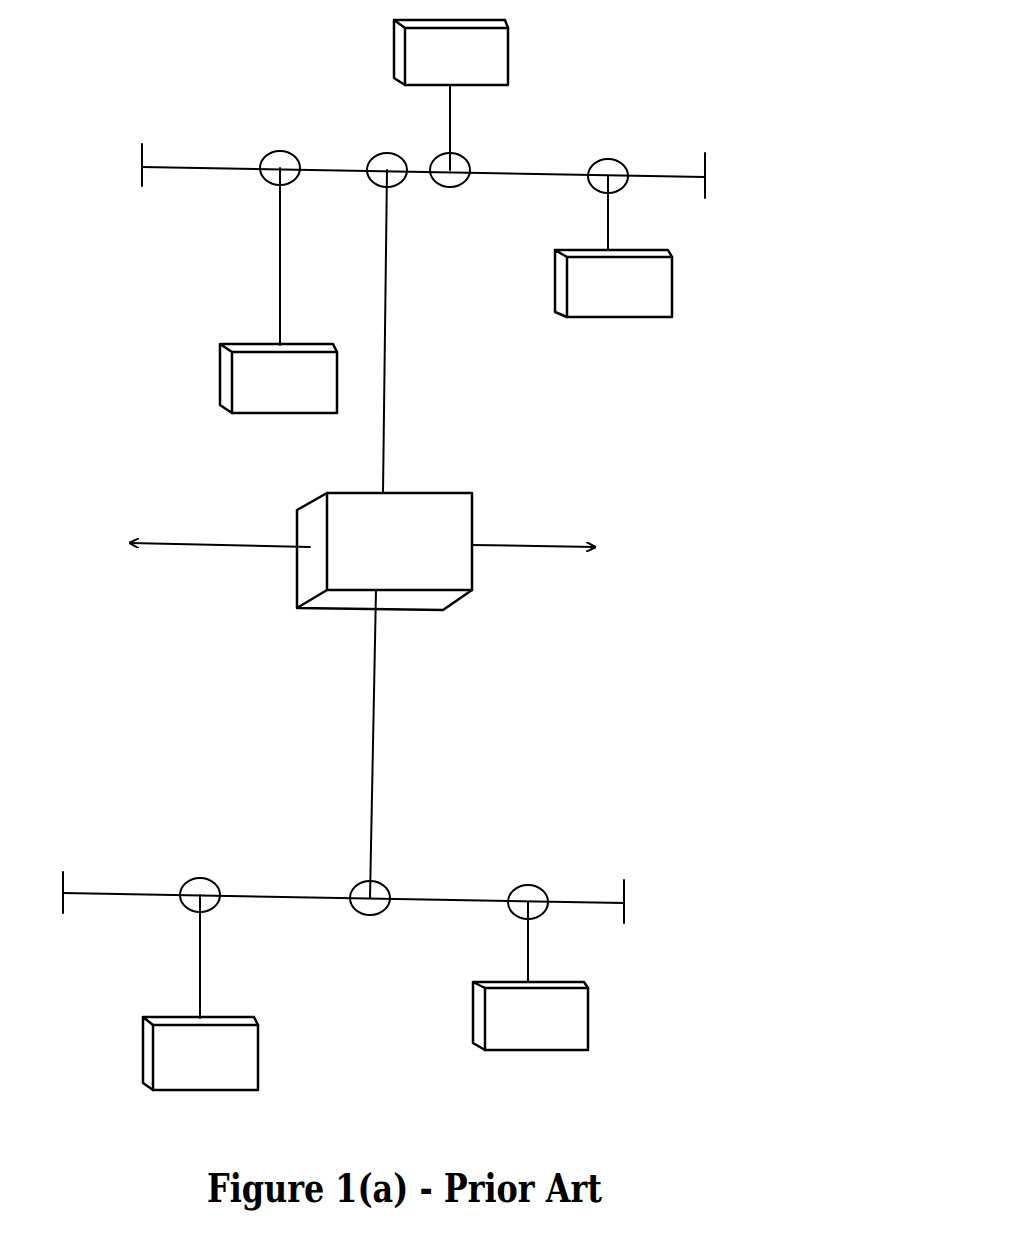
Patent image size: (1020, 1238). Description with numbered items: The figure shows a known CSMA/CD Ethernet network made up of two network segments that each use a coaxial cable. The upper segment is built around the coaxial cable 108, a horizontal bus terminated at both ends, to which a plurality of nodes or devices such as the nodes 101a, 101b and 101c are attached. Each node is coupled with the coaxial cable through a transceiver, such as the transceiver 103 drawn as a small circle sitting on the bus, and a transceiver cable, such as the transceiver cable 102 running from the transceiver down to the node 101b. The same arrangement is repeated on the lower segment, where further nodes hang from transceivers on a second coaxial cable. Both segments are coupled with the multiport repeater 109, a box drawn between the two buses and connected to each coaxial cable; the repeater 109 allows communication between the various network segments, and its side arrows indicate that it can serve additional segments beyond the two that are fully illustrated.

The node 101a is at (388, 65).
The node 101b is at (220, 378).
The node 101c is at (678, 292).
The transceiver cable 102 is at (278, 242).
The transceiver 103 is at (260, 188).
The coaxial cable 108 is at (200, 160).
The multiport repeater 109 is at (478, 602).